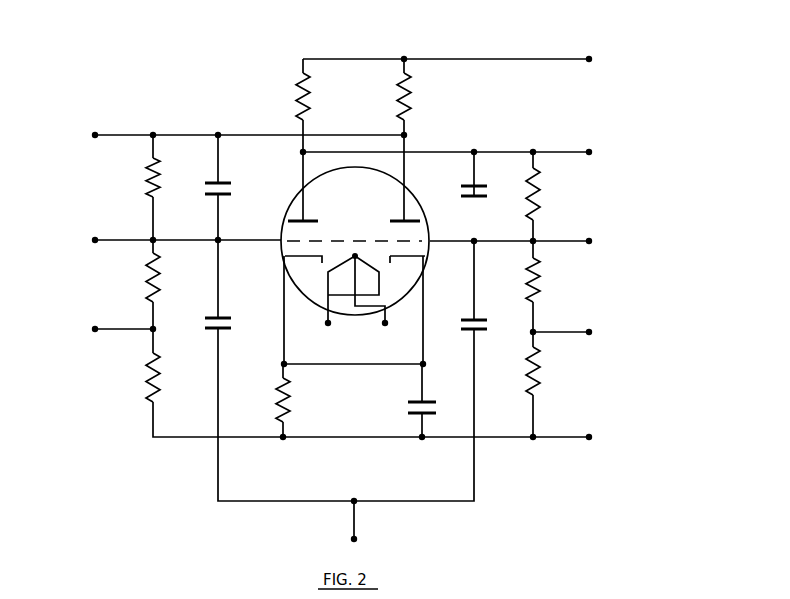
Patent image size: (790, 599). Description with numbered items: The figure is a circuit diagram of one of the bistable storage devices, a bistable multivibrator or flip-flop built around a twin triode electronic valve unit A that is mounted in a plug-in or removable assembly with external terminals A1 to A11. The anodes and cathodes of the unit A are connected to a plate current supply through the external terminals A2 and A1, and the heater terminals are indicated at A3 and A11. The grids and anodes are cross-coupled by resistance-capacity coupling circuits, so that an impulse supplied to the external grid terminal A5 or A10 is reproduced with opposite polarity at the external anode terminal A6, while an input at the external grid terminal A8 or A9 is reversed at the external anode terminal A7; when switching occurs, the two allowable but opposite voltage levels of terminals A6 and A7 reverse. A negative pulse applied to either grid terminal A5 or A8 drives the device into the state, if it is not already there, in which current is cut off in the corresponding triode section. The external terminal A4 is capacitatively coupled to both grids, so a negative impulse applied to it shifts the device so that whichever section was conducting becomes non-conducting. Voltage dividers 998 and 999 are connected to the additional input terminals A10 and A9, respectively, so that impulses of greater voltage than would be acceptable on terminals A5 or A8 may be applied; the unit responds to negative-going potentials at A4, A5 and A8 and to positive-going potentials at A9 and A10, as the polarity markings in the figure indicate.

The twin triode electronic valve unit A is at (417, 250).
The external terminal A1 is at (589, 440).
The external terminal A2 is at (589, 58).
The heater terminal A3 is at (328, 326).
The external terminal A4 is at (351, 539).
The external grid terminal A5 is at (95, 238).
The external anode terminal A6 is at (589, 151).
The external anode terminal A7 is at (95, 133).
The external grid terminal A8 is at (589, 240).
The additional input terminal A9 is at (589, 335).
The additional input terminal A10 is at (95, 332).
The heater terminal A11 is at (385, 326).
The voltage divider 998 is at (155, 246).
The voltage divider 999 is at (536, 264).